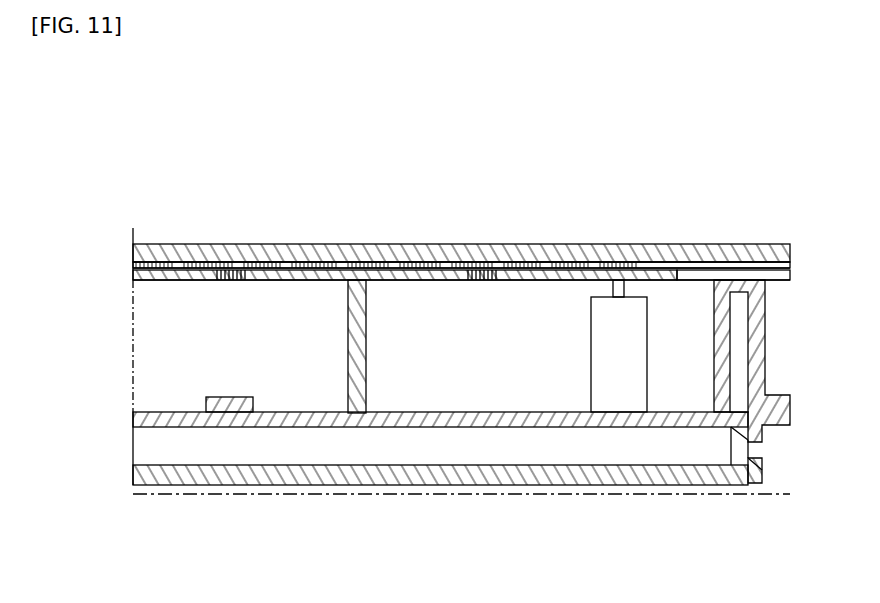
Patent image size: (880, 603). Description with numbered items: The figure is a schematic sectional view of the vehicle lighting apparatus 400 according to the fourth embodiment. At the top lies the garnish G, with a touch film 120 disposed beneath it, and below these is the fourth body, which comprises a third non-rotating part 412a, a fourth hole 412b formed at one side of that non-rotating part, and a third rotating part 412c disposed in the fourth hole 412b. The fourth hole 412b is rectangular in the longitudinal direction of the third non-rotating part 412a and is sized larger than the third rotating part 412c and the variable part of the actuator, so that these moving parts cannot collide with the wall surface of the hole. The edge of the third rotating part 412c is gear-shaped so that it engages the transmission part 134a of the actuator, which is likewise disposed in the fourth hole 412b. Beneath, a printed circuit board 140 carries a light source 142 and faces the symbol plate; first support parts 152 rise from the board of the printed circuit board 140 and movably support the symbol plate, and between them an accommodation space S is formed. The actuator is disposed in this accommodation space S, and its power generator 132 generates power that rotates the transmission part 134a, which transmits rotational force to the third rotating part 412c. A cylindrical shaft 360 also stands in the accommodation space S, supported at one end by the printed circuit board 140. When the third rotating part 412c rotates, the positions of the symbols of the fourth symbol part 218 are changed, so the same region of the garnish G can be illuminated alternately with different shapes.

The vehicle lighting apparatus 400 is at (100, 110).
The touch film 120 is at (342, 264).
The third non-rotating part 412a is at (775, 274).
The fourth hole 412b is at (186, 275).
The third rotating part 412c is at (412, 274).
The fourth symbol part 218 is at (231, 278).
The garnish G is at (290, 262).
The shaft 360 is at (355, 406).
The transmission part 134a is at (622, 272).
The power generator 132 is at (622, 398).
The first support part 152 is at (733, 283).
The printed circuit board 140 is at (288, 415).
The light source 142 is at (225, 406).
The accommodation space S is at (165, 337).